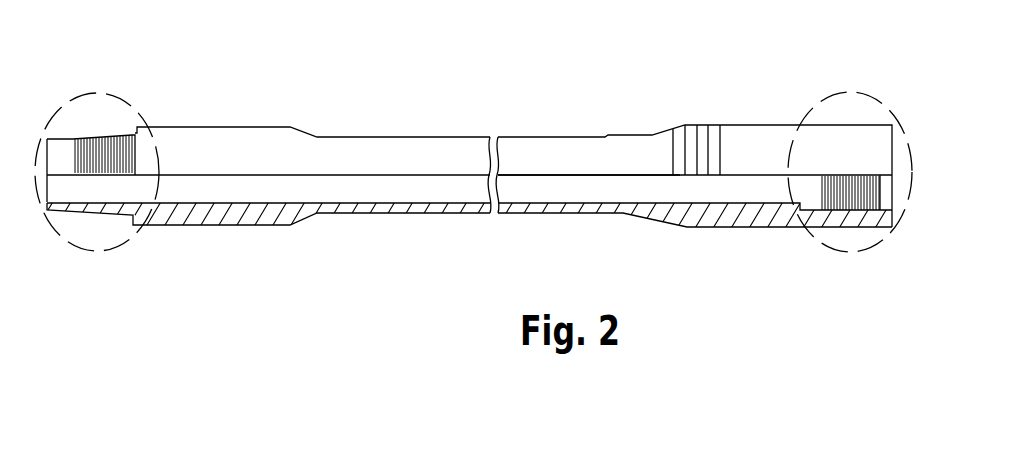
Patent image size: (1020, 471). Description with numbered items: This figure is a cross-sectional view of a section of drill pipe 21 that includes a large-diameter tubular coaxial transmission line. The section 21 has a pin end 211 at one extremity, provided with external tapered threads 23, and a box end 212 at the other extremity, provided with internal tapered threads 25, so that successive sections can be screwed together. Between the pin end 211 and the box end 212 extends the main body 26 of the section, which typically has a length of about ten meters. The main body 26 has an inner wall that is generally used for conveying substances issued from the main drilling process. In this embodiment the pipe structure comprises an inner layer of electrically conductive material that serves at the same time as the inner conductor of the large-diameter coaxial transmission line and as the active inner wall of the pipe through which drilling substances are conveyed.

The section of drill pipe 21 is at (440, 88).
The external tapered threads 23 is at (98, 135).
The internal tapered threads 25 is at (840, 205).
The main body 26 is at (443, 165).
The pin end 211 is at (78, 252).
The box end 212 is at (828, 97).